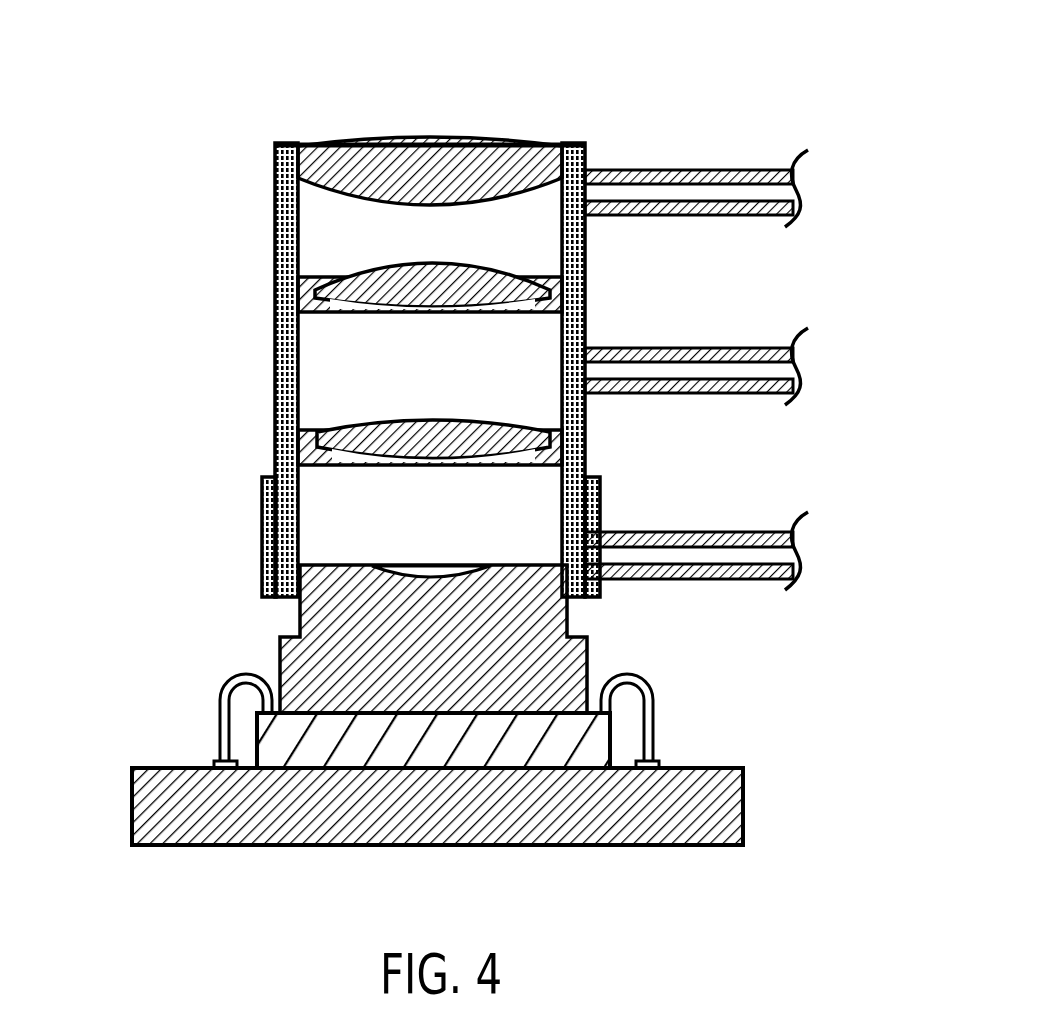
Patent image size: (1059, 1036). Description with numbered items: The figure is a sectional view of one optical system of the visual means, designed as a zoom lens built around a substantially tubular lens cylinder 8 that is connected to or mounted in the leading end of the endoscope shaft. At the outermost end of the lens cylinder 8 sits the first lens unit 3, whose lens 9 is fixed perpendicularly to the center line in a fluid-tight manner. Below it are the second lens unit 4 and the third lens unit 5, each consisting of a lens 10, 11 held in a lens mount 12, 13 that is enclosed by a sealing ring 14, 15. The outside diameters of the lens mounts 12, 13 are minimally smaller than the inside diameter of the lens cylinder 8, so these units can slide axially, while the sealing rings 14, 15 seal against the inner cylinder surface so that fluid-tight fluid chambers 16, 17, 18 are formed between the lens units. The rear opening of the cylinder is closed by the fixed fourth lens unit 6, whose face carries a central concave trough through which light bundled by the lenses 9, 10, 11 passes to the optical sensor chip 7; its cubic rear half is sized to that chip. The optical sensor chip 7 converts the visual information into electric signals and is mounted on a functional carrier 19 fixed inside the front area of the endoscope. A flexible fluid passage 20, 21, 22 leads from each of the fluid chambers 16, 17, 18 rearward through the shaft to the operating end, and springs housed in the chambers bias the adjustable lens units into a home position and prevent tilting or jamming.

The first lens unit 3 is at (343, 133).
The second lens unit 4 is at (330, 260).
The third lens unit 5 is at (338, 412).
The fourth lens unit 6 is at (340, 668).
The optical sensor chip 7 is at (310, 745).
The lens cylinder 8 is at (273, 185).
The lens 9 is at (413, 155).
The lens 10 is at (461, 276).
The lens 11 is at (443, 425).
The lens mount 12 is at (332, 312).
The lens mount 13 is at (340, 468).
The sealing ring 14 is at (583, 290).
The sealing ring 15 is at (583, 447).
The fluid chamber 16 is at (520, 237).
The fluid chamber 17 is at (530, 395).
The fluid chamber 18 is at (505, 525).
The functional carrier 19 is at (573, 810).
The fluid passage 20 is at (687, 170).
The fluid passage 21 is at (762, 350).
The fluid passage 22 is at (753, 530).